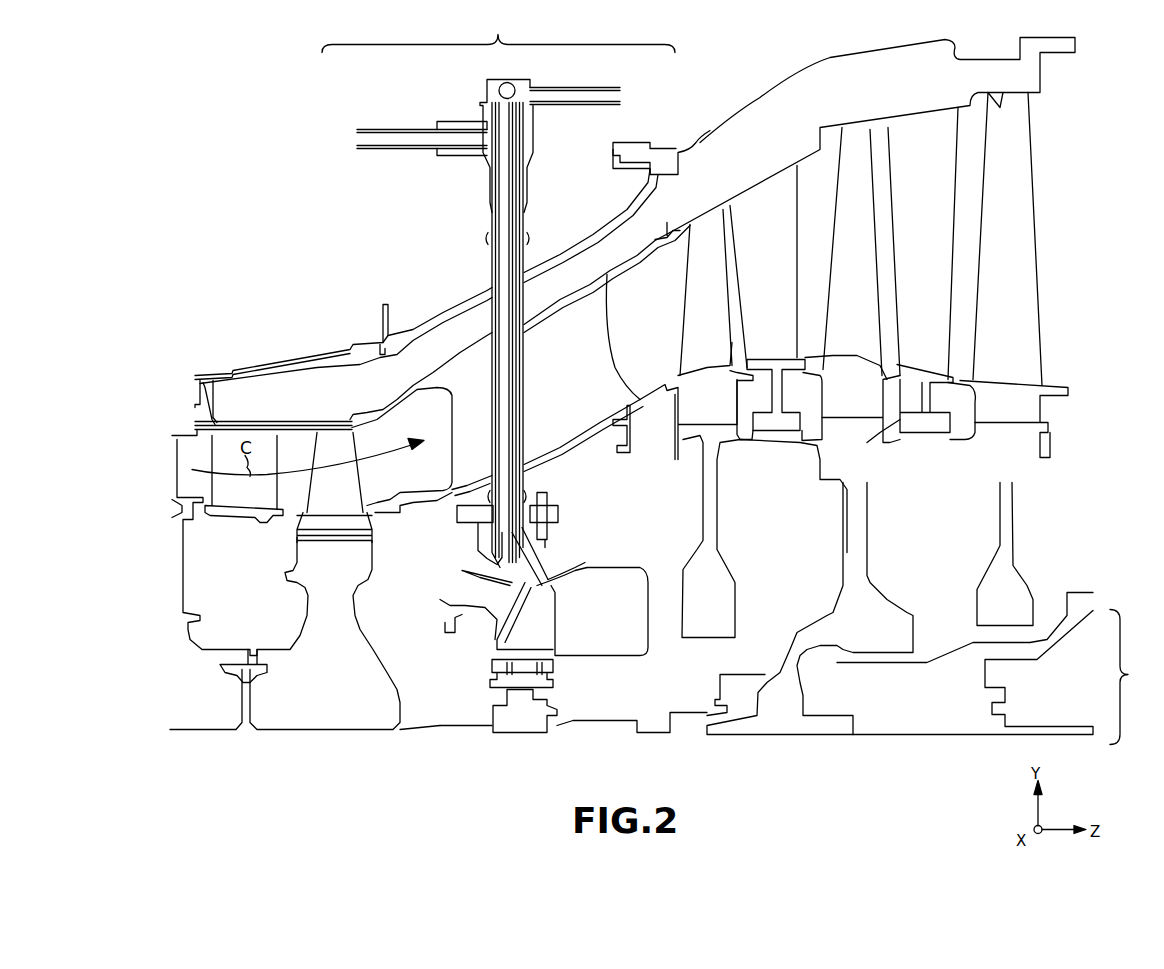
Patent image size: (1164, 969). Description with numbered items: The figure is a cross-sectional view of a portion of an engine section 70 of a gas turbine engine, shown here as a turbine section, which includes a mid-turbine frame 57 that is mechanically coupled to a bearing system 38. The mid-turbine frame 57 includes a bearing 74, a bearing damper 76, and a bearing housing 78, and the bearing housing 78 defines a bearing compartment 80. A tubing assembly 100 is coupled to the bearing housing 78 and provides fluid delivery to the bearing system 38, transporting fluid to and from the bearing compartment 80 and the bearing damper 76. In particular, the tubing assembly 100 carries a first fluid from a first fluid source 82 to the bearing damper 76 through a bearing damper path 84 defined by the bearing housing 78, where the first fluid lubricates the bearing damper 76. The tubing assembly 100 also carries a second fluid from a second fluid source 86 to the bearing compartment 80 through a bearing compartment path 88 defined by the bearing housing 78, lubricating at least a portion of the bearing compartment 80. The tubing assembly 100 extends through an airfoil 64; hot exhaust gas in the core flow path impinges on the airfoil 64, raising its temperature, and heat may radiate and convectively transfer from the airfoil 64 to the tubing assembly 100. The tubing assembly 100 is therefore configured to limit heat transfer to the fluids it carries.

The bearing system 38 is at (1133, 677).
The mid-turbine frame 57 is at (498, 32).
The airfoil 64 is at (600, 348).
The engine section 70 is at (157, 117).
The bearing 74 is at (500, 688).
The bearing damper 76 is at (550, 662).
The bearing housing 78 is at (558, 562).
The bearing compartment 80 is at (640, 577).
The first fluid source 82 is at (618, 96).
The bearing damper path 84 is at (512, 585).
The second fluid source 86 is at (360, 133).
The bearing compartment path 88 is at (537, 558).
The tubing assembly 100 is at (485, 358).